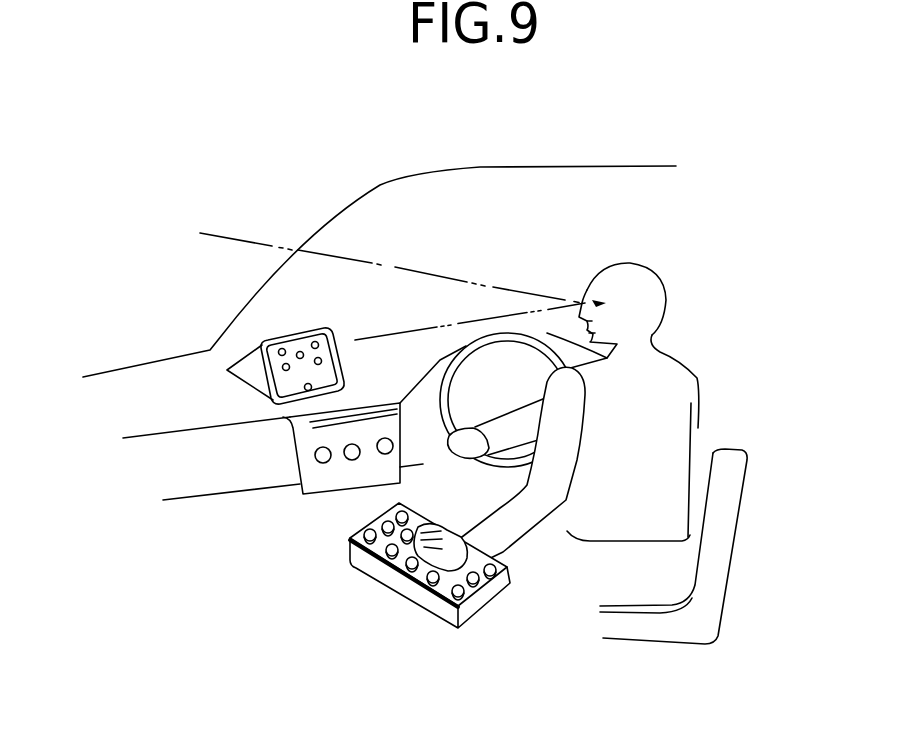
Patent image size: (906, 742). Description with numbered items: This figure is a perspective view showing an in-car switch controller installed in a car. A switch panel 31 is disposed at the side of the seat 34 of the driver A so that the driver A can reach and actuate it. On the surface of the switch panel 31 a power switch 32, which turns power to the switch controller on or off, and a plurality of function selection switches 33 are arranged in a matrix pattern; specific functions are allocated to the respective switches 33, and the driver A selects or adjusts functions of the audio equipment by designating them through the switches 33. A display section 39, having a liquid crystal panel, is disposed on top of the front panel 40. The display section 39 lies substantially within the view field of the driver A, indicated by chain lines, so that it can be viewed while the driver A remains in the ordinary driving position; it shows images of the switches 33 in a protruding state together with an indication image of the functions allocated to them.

The switch panel 31 is at (341, 526).
The power switch 32 is at (491, 575).
The function selection switches 33 is at (388, 564).
The seat 34 is at (743, 494).
The display section 39 is at (293, 337).
The front panel 40 is at (250, 460).
The driver A is at (698, 388).